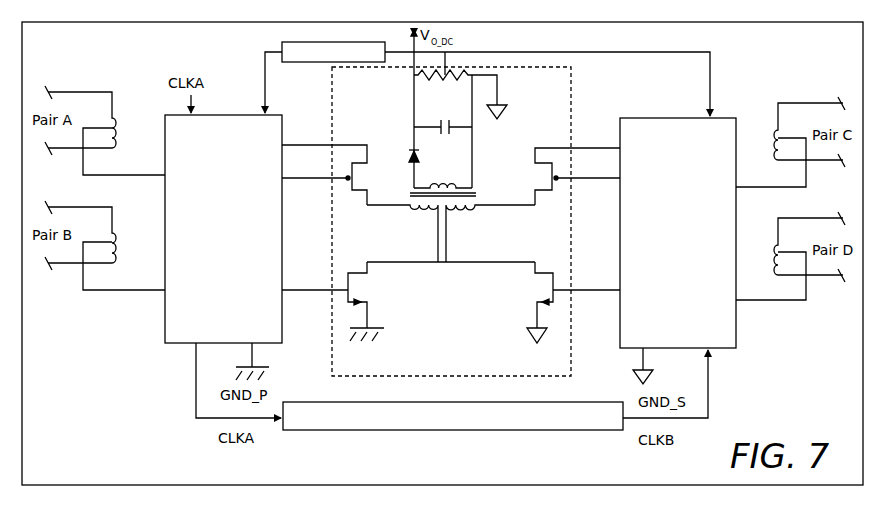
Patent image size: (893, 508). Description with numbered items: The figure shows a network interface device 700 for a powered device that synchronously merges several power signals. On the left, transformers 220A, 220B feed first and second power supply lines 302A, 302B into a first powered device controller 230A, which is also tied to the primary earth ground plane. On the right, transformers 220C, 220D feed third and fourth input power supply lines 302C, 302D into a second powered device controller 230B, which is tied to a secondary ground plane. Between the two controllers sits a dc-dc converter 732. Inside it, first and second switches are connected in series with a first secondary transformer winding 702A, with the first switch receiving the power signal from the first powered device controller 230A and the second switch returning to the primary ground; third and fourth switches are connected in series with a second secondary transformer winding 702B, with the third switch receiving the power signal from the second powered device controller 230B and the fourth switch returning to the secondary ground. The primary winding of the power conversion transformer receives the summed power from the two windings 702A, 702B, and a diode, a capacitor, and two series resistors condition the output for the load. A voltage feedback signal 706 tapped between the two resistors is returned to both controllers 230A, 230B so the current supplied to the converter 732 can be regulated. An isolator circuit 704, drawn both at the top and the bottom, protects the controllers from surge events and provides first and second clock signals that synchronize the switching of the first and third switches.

The network interface device 700 is at (442, 253).
The isolator circuit 704 is at (452, 236).
The voltage feedback signal 706 is at (522, 52).
The dc-dc converter 732 is at (451, 214).
The first secondary transformer winding 702A is at (416, 208).
The second secondary transformer winding 702B is at (463, 208).
The transformer 220A is at (116, 127).
The transformer 220B is at (116, 242).
The transformer 220C is at (775, 139).
The transformer 220D is at (775, 253).
The first power supply line 302A is at (150, 177).
The second power supply line 302B is at (150, 291).
The third input power supply line 302C is at (772, 188).
The fourth input power supply line 302D is at (772, 301).
The first powered device controller 230A is at (223, 229).
The second powered device controller 230B is at (678, 233).